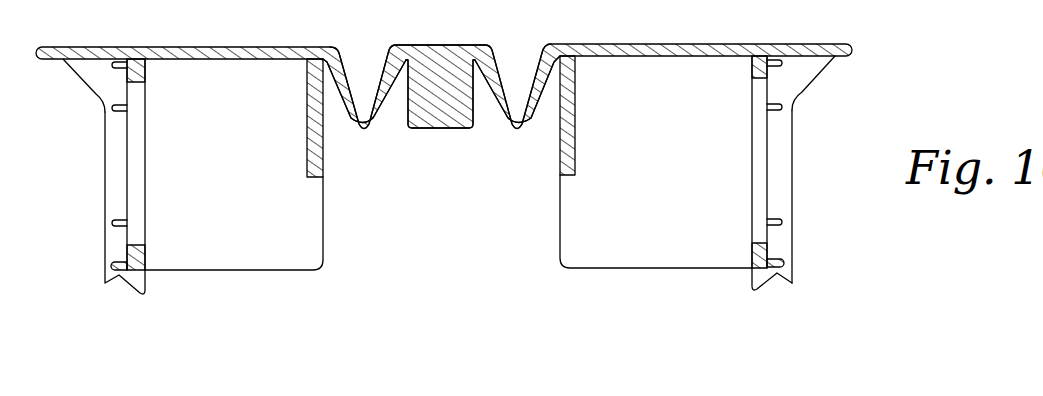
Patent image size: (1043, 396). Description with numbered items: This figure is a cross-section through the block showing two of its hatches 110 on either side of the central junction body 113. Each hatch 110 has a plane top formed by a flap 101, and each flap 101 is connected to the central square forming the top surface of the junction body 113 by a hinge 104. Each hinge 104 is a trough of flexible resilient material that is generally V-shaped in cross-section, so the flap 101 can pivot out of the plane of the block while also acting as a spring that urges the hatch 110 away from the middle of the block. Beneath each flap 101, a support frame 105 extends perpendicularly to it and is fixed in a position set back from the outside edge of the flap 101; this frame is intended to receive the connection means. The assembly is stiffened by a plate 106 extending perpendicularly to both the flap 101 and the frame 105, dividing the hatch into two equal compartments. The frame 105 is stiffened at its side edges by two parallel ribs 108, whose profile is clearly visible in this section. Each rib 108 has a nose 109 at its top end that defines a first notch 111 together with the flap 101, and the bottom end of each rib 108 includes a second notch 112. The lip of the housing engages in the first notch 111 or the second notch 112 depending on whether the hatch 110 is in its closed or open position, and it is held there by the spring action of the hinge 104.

The flap 101 is at (200, 47).
The hinge 104 is at (521, 131).
The support frame 105 is at (113, 265).
The plate 106 is at (326, 163).
The ribs 108 is at (113, 184).
The nose 109 is at (86, 77).
The hatch 110 is at (637, 288).
The first notch 111 is at (836, 60).
The second notch 112 is at (780, 278).
The junction body 113 is at (438, 131).